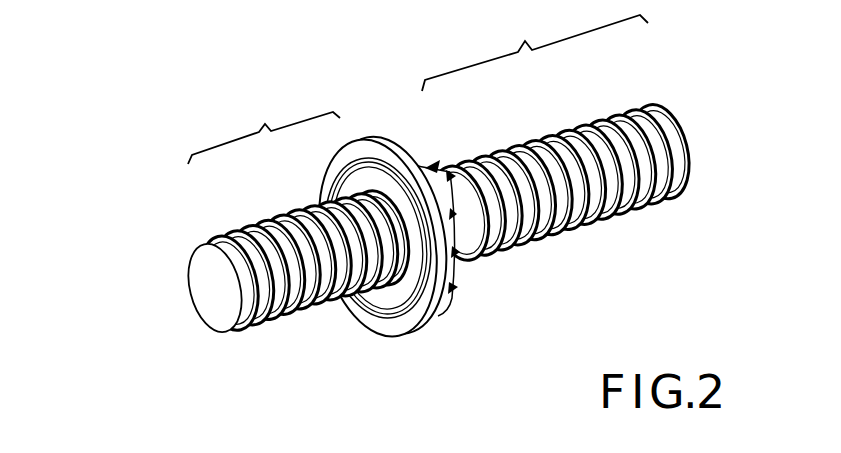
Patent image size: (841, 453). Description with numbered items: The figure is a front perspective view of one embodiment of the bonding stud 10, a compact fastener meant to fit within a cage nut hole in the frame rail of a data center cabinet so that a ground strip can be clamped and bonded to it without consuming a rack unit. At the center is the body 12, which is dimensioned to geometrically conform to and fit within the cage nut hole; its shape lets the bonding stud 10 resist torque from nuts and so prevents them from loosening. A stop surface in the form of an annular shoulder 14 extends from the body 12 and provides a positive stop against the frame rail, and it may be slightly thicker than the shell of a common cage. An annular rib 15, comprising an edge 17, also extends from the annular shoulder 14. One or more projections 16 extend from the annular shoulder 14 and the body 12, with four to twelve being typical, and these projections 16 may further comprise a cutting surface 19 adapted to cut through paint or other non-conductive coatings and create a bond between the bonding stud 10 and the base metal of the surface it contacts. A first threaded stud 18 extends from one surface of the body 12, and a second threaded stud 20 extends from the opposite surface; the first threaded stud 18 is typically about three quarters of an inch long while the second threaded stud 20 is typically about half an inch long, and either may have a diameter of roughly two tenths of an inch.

The bonding stud 10 is at (305, 82).
The body 12 is at (453, 172).
The annular shoulder 14 is at (370, 138).
The annular rib 15 is at (355, 313).
The projections 16 is at (553, 341).
The edge 17 is at (381, 340).
The first threaded stud 18 is at (590, 198).
The cutting surface 19 is at (495, 237).
The second threaded stud 20 is at (207, 288).